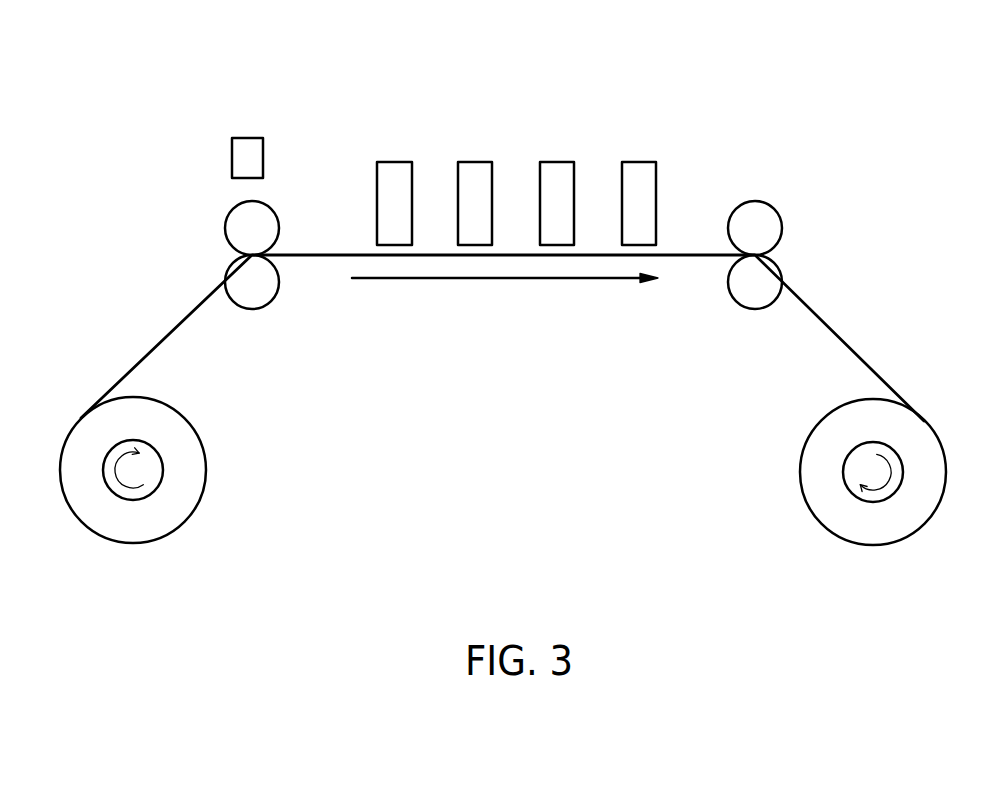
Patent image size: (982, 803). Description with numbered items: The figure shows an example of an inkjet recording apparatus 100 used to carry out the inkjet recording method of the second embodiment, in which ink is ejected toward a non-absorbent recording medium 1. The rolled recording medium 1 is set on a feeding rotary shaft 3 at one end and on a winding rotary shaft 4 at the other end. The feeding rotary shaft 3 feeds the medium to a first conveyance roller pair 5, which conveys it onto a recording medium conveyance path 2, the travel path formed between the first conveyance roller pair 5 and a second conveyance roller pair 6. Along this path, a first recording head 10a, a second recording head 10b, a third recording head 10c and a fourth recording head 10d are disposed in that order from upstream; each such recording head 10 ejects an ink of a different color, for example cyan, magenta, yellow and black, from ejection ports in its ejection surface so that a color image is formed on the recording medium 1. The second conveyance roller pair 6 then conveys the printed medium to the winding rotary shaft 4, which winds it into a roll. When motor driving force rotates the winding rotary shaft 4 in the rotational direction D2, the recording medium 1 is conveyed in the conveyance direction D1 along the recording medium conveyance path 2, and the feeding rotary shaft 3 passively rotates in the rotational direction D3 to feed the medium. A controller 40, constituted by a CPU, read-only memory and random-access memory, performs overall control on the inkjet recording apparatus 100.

The inkjet recording apparatus 100 is at (799, 124).
The recording medium 1 is at (692, 256).
The recording medium conveyance path 2 is at (301, 241).
The feeding rotary shaft 3 is at (132, 472).
The winding rotary shaft 4 is at (873, 472).
The first conveyance roller pair 5 is at (247, 228).
The second conveyance roller pair 6 is at (757, 228).
The recording head 10 is at (682, 72).
The first recording head 10a is at (395, 162).
The second recording head 10b is at (475, 162).
The third recording head 10c is at (557, 162).
The fourth recording head 10d is at (640, 162).
The controller 40 is at (245, 138).
The conveyance direction D1 is at (503, 281).
The rotational direction of winding rotary shaft D2 is at (883, 488).
The rotational direction of feeding rotary shaft D3 is at (122, 487).